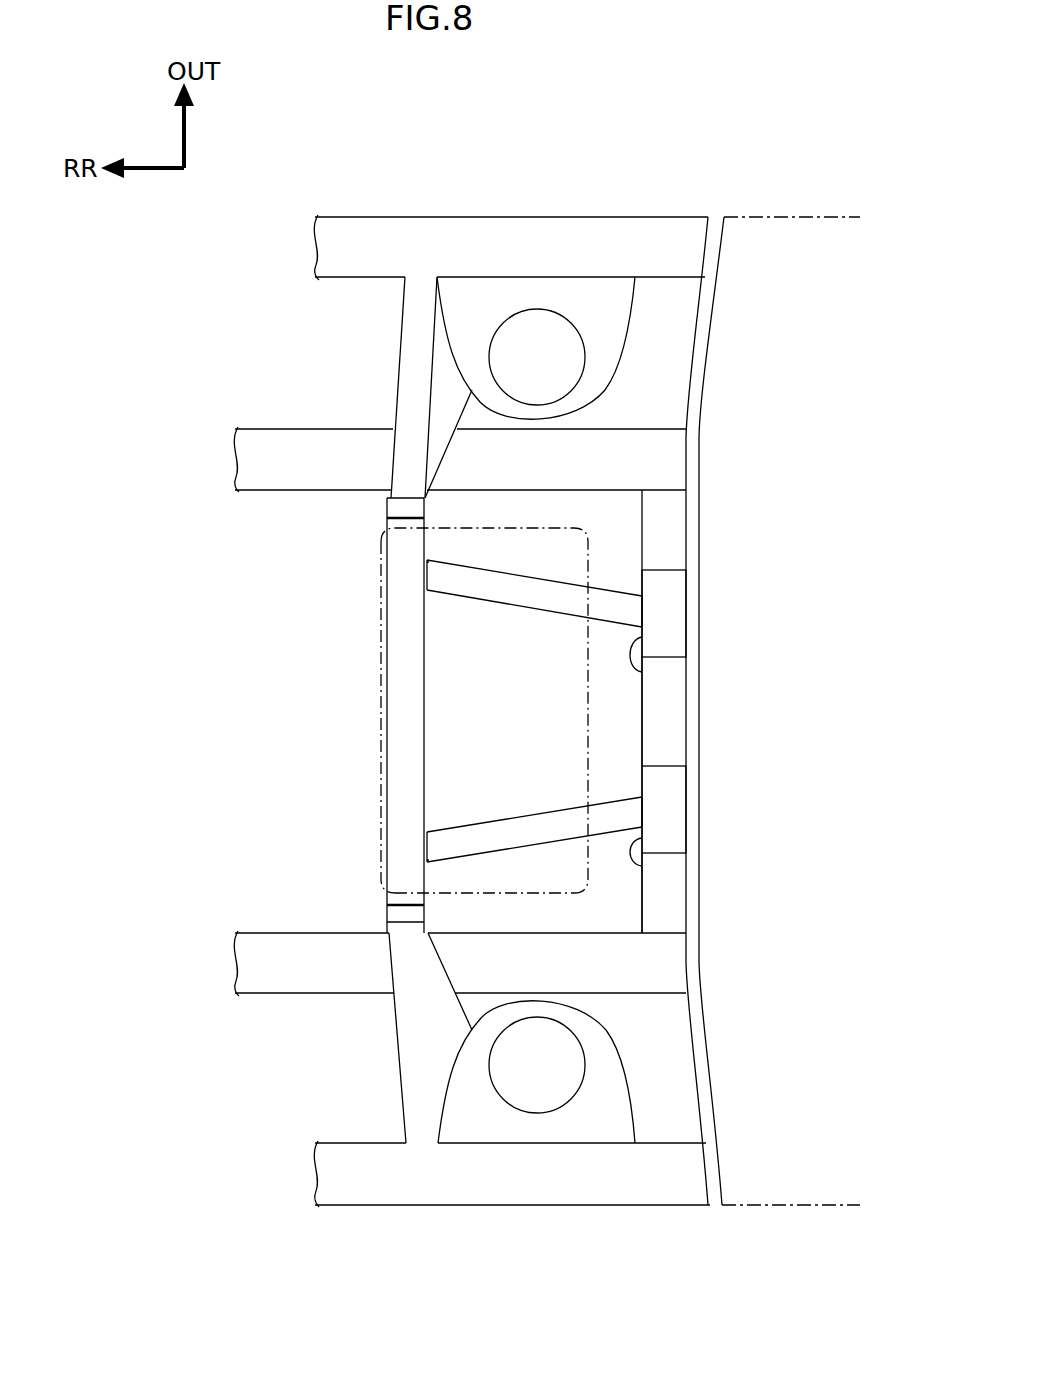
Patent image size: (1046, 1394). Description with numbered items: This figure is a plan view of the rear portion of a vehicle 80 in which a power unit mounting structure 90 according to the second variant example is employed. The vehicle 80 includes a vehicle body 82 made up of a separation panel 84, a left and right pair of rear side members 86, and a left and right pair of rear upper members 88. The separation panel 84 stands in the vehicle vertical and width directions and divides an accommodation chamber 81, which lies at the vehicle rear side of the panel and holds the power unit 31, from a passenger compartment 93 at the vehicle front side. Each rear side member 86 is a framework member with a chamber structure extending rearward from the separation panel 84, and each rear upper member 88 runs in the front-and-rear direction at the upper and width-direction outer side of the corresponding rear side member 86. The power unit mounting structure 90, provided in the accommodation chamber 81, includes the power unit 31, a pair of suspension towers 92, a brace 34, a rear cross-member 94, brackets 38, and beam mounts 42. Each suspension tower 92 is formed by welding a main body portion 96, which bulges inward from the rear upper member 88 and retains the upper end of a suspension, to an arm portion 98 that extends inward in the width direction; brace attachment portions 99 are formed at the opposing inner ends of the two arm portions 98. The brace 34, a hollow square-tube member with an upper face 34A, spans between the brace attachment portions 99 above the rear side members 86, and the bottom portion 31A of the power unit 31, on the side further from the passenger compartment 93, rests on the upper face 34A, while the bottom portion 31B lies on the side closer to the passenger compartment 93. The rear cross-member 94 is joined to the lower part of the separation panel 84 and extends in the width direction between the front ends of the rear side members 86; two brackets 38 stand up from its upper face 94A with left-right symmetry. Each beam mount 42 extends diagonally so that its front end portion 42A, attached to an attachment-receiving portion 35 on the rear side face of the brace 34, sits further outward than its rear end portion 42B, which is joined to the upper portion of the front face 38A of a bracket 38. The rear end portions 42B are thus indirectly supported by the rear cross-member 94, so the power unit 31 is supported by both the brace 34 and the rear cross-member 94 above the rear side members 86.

The vehicle 80 is at (726, 148).
The vehicle body 82 is at (634, 213).
The separation panel 84 is at (714, 350).
The rear side member 86 is at (301, 426).
The rear upper member 88 is at (505, 248).
The power unit mounting structure 90 is at (290, 604).
The suspension tower 92 is at (428, 136).
The passenger compartment 93 is at (755, 602).
The rear cross-member 94 is at (668, 532).
The upper face 94A is at (663, 729).
The main body portion 96 is at (472, 300).
The arm portion 98 is at (400, 316).
The brace attachment portion 99 is at (387, 509).
The power unit 31 is at (598, 711).
The bottom portion 31A is at (383, 812).
The bottom portion 31B is at (548, 896).
The brace 34 is at (383, 722).
The upper face 34A is at (404, 665).
The attachment-receiving portion 35 is at (427, 578).
The bracket 38 is at (664, 617).
The front face 38A is at (642, 672).
The beam mount 42 is at (538, 612).
The front end portion 42A is at (438, 558).
The rear end portion 42B is at (633, 592).
The accommodation chamber 81 is at (620, 875).